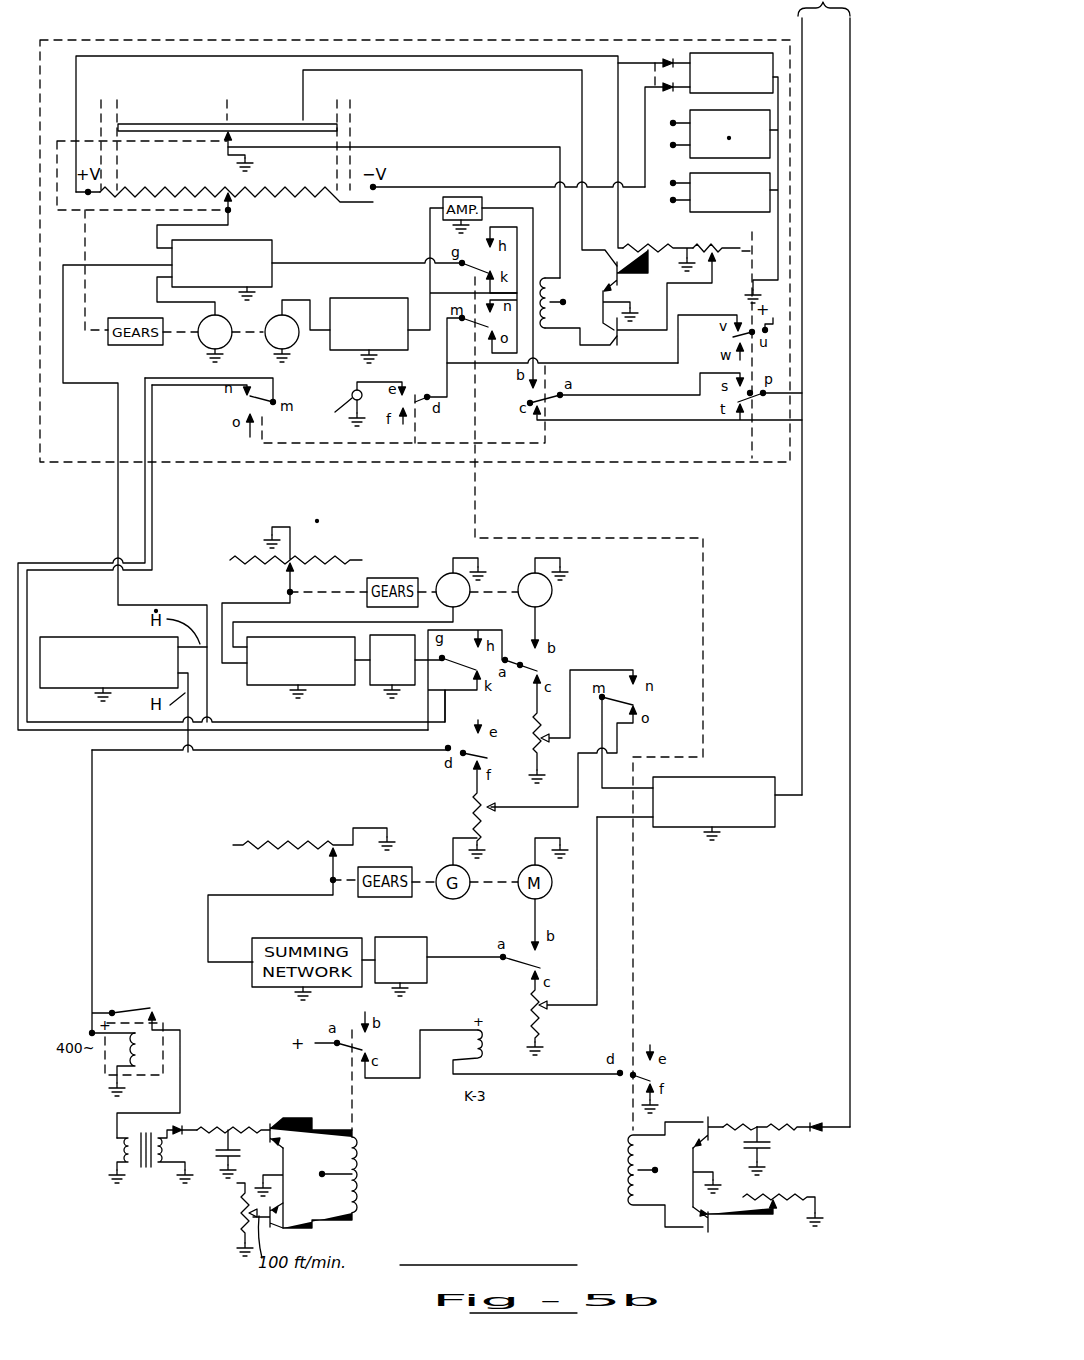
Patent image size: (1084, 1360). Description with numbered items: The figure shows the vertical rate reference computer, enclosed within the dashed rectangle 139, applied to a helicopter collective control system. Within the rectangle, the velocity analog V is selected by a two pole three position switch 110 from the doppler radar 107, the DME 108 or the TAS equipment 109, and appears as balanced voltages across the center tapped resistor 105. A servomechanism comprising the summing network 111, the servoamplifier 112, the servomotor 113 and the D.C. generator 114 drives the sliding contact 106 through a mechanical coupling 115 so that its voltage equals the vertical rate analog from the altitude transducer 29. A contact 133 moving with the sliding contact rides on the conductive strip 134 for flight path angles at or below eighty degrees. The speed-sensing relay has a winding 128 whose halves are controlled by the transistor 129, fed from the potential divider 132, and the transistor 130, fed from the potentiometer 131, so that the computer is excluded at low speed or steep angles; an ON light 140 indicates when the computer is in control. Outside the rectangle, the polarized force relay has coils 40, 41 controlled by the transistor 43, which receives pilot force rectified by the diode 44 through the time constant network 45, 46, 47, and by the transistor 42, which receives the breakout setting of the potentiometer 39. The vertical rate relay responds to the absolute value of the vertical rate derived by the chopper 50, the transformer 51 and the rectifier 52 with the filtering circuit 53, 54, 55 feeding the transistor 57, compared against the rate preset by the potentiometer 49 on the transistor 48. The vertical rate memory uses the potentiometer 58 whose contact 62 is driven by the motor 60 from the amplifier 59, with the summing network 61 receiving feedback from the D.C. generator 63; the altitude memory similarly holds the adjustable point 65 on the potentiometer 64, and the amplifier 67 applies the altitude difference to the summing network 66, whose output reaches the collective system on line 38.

The rectangle 139 is at (373, 38).
The line 38 is at (803, 82).
The two pole three position switch 110 is at (650, 65).
The center tapped resistor 105 is at (182, 188).
The conductive strip 134 is at (184, 114).
The contact 133 is at (236, 137).
The sliding contact 106 is at (238, 204).
The mechanical coupling 115 is at (80, 240).
The summing network 111 is at (275, 241).
The D.C. generator 114 is at (230, 349).
The servomotor 113 is at (296, 349).
The servoamplifier 112 is at (388, 304).
The ON light 140 is at (340, 411).
The winding 128 is at (563, 293).
The transistor 129 is at (632, 285).
The transistor 130 is at (642, 303).
The potential divider 132 is at (656, 240).
The potentiometer 131 is at (731, 247).
The doppler radar 107 is at (760, 54).
The DME 108 is at (760, 113).
The TAS equipment 109 is at (722, 222).
The potentiometer 58 is at (250, 549).
The contact 62 is at (293, 575).
The D.C. generator 63 is at (438, 578).
The motor 60 is at (556, 588).
The altitude transducer 29 is at (97, 635).
The summing network 61 is at (256, 689).
The amplifier 59 is at (359, 689).
The summing network 66 is at (737, 768).
The potentiometer 64 is at (246, 860).
The adjustable point 65 is at (328, 858).
The amplifier 67 is at (430, 975).
The chopper 50 is at (137, 1013).
The transformer 51 is at (148, 1170).
The rectifier 52 is at (179, 1117).
The filtering and time constant circuit element 53 is at (218, 1119).
The filtering and time constant circuit element 55 is at (217, 1162).
The filtering and time constant circuit element 54 is at (251, 1123).
The transistor 48 is at (278, 1228).
The potentiometer 49 is at (237, 1213).
The transistor 57 is at (287, 1134).
The coil 40 is at (627, 1150).
The coil 41 is at (625, 1198).
The transistor 43 is at (708, 1140).
The transistor 42 is at (716, 1219).
The time constant network element 45 is at (726, 1124).
The time constant network element 47 is at (775, 1146).
The time constant network element 46 is at (768, 1124).
The diode 44 is at (814, 1123).
The potentiometer 39 is at (794, 1191).